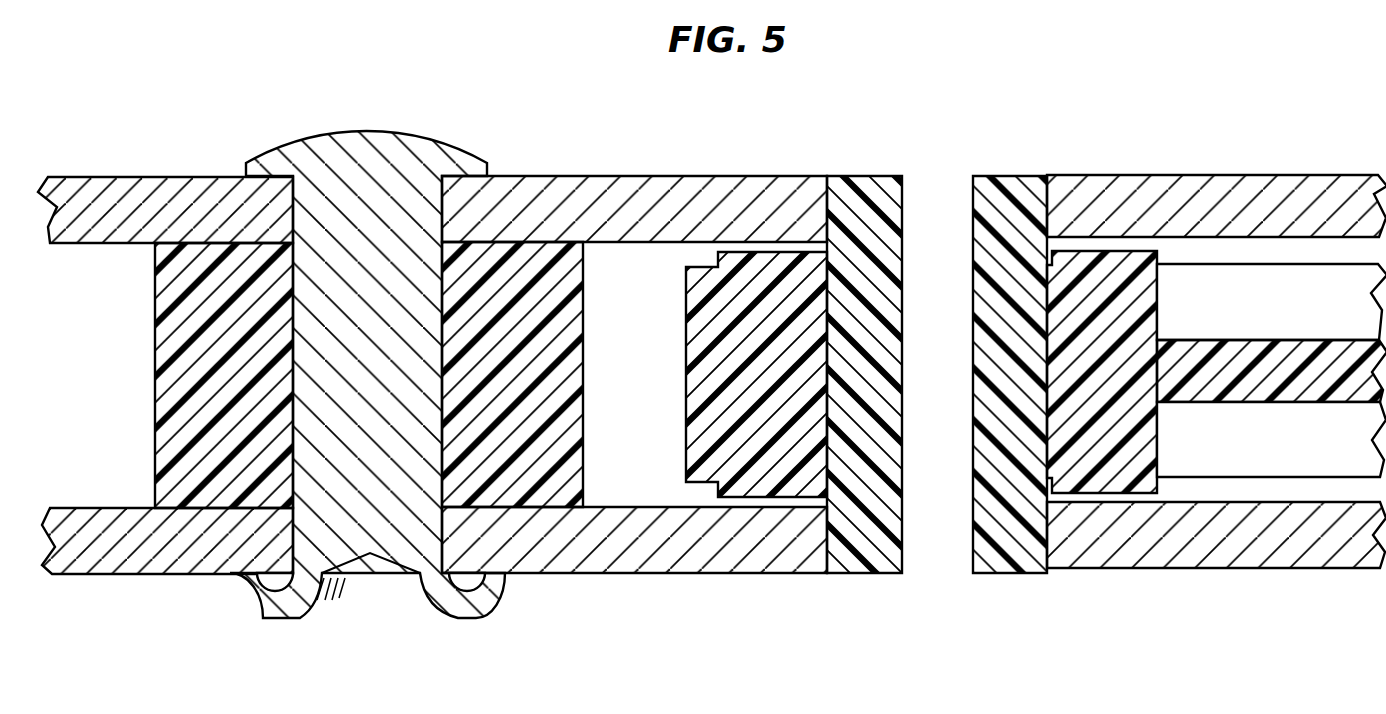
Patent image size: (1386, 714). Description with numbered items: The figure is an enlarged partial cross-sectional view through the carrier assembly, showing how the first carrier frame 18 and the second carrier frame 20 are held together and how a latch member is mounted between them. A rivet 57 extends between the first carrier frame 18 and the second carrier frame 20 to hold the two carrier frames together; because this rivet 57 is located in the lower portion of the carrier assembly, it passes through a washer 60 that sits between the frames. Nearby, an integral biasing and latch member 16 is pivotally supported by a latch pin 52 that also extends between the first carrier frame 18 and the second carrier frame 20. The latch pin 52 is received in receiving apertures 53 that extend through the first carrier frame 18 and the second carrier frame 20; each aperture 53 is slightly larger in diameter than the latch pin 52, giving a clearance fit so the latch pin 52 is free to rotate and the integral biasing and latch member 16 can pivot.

The integral biasing and latch member 16 is at (1157, 305).
The first carrier frame 18 is at (658, 176).
The second carrier frame 20 is at (612, 573).
The latch pin 52 is at (1012, 175).
The receiving aperture 53 is at (826, 175).
The rivet 57 is at (347, 140).
The washer 60 is at (155, 345).